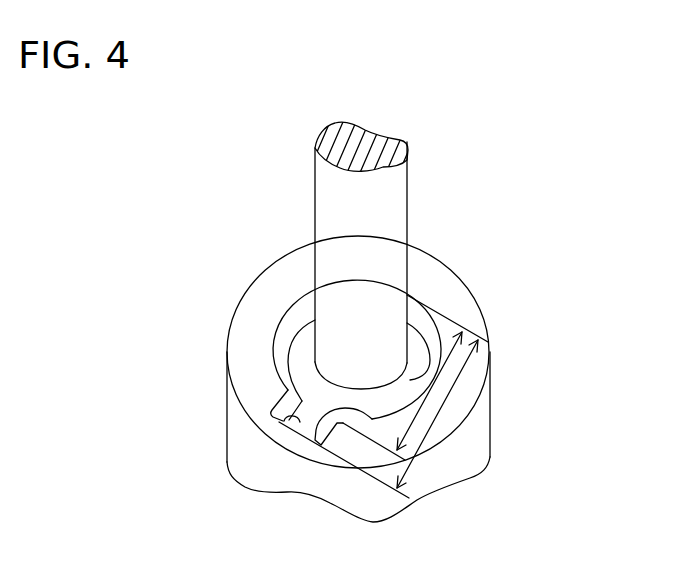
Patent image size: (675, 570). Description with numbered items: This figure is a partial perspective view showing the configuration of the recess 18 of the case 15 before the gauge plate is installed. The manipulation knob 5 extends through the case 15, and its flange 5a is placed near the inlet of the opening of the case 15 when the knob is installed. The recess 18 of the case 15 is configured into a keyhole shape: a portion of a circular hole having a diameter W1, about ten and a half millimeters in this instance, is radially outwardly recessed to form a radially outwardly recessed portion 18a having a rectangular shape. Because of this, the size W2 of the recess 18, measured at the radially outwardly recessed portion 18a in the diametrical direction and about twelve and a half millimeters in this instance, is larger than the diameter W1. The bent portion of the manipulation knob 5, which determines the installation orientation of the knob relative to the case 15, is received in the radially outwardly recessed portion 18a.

The manipulation knob 5 is at (314, 182).
The flange 5a is at (417, 350).
The case 15 is at (228, 402).
The recess 18 is at (313, 434).
The radially outwardly recessed portion 18a is at (280, 421).
The diameter W1 is at (451, 358).
The size W2 is at (452, 414).